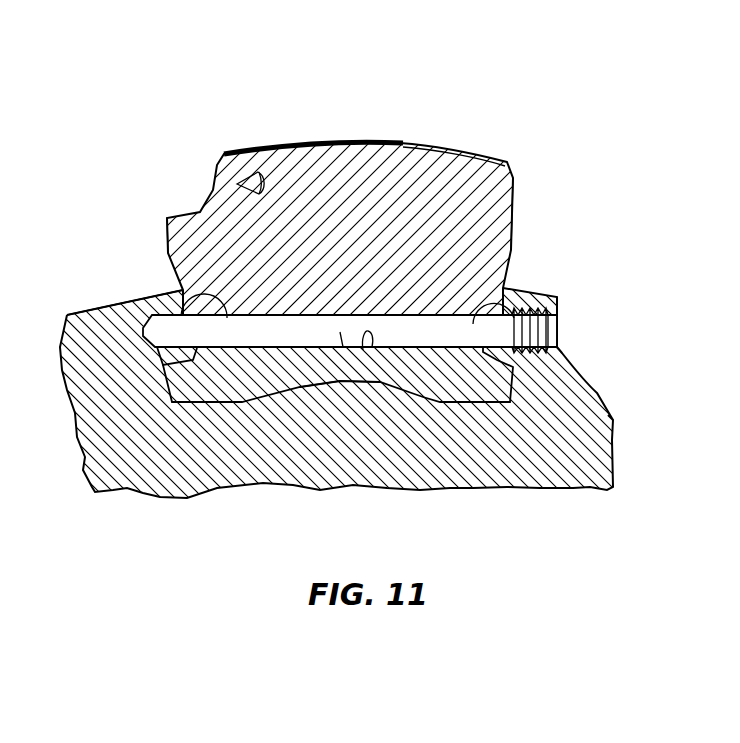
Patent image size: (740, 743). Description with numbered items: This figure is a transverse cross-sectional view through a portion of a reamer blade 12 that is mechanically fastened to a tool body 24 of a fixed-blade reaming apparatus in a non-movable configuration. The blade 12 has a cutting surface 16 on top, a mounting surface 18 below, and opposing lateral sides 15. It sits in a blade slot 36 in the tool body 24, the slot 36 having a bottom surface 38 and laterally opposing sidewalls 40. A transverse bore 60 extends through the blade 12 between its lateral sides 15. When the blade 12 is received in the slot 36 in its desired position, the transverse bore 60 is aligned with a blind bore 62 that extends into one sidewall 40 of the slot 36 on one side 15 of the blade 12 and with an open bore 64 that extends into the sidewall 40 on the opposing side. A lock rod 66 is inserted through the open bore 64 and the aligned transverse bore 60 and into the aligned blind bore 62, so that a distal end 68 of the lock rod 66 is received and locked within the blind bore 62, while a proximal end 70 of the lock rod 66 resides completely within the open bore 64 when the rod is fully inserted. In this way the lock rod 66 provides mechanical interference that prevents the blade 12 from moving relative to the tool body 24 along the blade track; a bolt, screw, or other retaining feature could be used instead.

The reamer blade 12 is at (252, 153).
The opposing lateral sides 15 is at (170, 254).
The cutting surface 16 is at (344, 143).
The mounting surface 18 is at (426, 397).
The tool body 24 is at (567, 467).
The blade slot 36 is at (308, 382).
The bottom surface 38 is at (392, 314).
The laterally opposing sidewalls 40 is at (228, 320).
The transverse bore 60 is at (363, 350).
The blind bore 62 is at (122, 312).
The open bore 64 is at (555, 328).
The lock rod 66 is at (341, 333).
The distal end 68 is at (193, 340).
The proximal end 70 is at (500, 327).